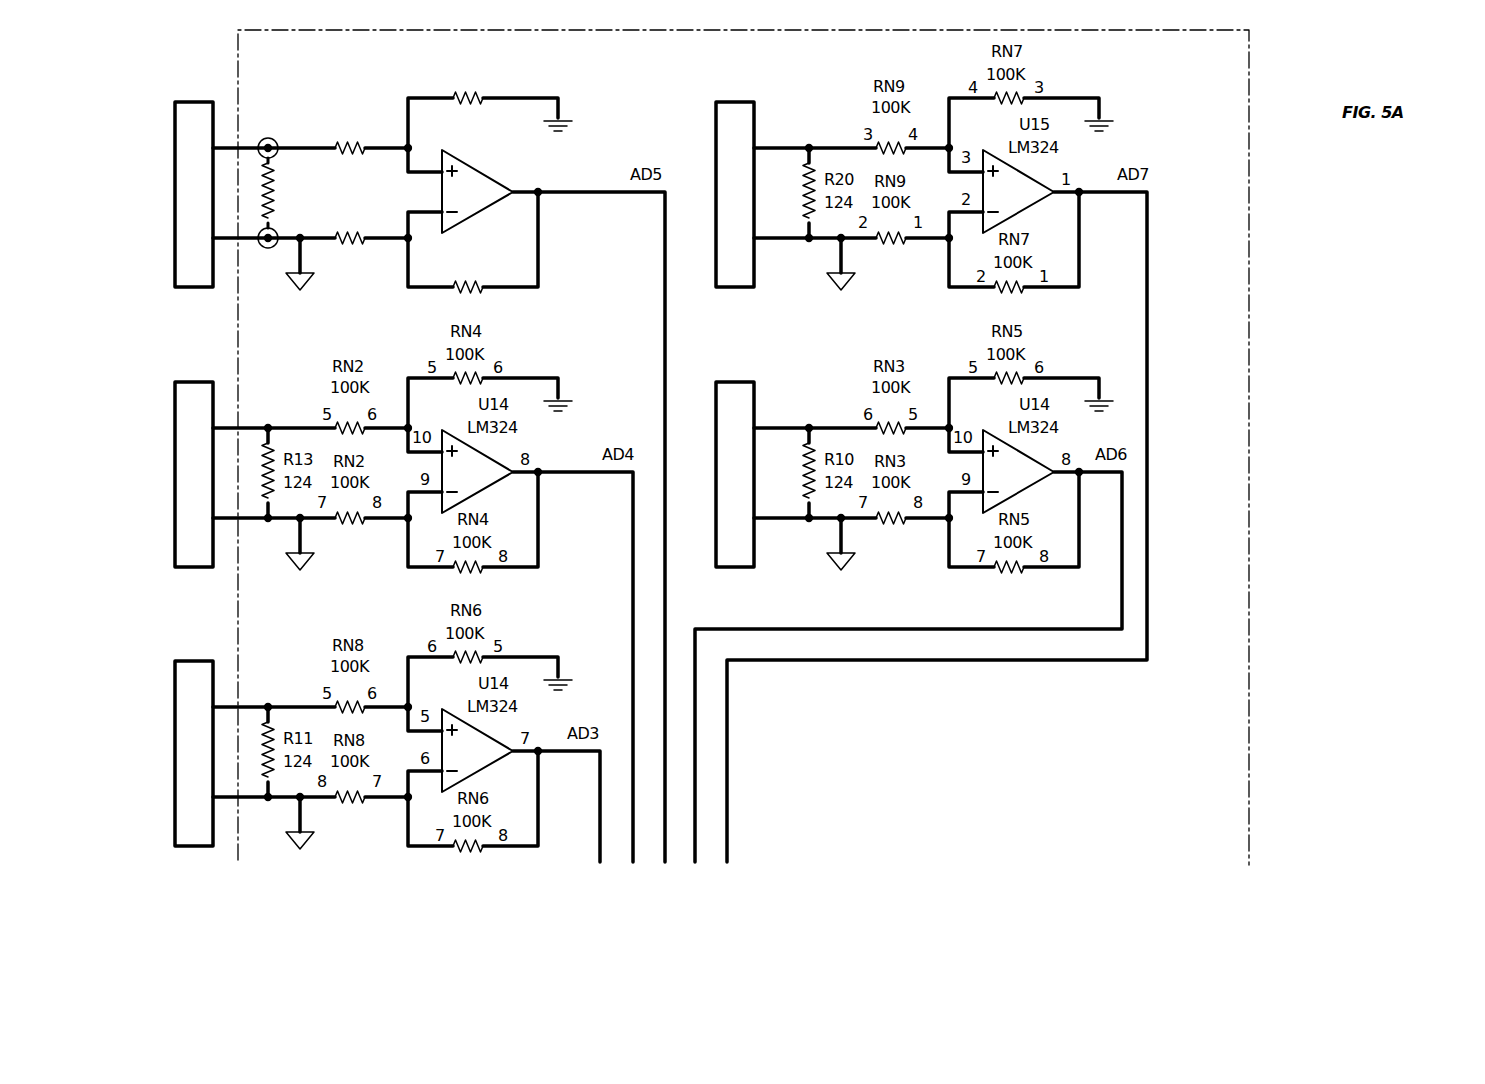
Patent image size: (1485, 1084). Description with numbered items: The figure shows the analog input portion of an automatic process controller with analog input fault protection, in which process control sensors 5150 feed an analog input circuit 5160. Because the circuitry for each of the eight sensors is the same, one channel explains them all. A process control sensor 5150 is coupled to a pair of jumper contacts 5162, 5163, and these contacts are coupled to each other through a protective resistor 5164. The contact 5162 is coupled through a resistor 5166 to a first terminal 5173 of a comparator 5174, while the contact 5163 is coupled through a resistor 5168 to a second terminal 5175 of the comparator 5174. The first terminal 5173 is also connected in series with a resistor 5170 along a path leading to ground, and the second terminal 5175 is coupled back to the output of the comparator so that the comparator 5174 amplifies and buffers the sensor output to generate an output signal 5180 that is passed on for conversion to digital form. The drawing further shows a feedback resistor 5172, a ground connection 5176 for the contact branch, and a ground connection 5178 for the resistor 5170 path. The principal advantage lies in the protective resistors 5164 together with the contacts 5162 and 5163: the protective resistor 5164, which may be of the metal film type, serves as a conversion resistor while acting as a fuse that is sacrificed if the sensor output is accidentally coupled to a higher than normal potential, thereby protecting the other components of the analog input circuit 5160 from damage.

The process control sensors 5150 is at (195, 100).
The analog input circuit 5160 is at (1249, 342).
The jumper contact 5162 is at (268, 138).
The jumper contact 5163 is at (268, 250).
The protective resistor 5164 is at (262, 193).
The resistor 5166 is at (350, 143).
The resistor 5168 is at (350, 248).
The resistor 5170 is at (472, 95).
The feedback resistor 5172 is at (473, 292).
The first terminal 5173 is at (443, 182).
The comparator 5174 is at (493, 175).
The second terminal 5175 is at (405, 204).
The ground connection 5176 is at (297, 292).
The ground connection of feedback resistor 5178 is at (560, 122).
The output signal 5180 is at (667, 355).